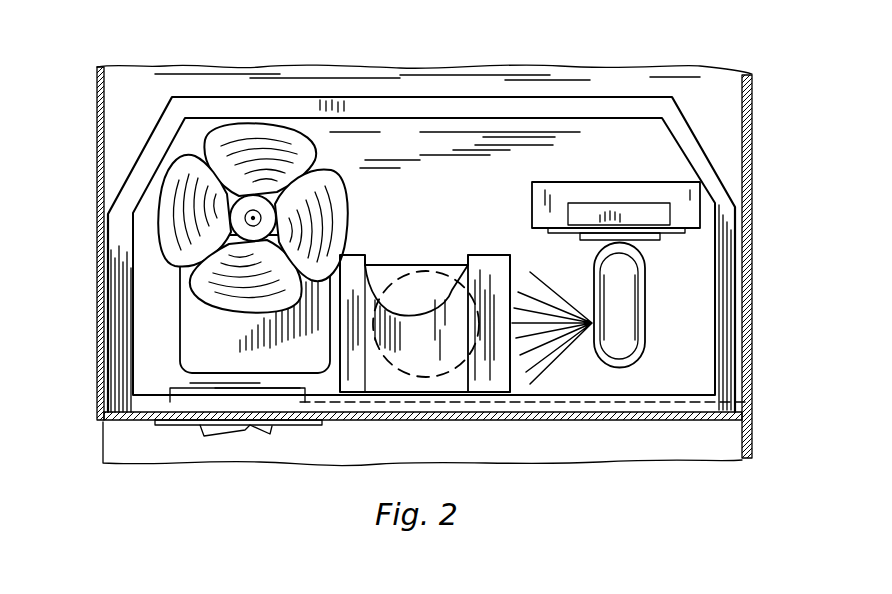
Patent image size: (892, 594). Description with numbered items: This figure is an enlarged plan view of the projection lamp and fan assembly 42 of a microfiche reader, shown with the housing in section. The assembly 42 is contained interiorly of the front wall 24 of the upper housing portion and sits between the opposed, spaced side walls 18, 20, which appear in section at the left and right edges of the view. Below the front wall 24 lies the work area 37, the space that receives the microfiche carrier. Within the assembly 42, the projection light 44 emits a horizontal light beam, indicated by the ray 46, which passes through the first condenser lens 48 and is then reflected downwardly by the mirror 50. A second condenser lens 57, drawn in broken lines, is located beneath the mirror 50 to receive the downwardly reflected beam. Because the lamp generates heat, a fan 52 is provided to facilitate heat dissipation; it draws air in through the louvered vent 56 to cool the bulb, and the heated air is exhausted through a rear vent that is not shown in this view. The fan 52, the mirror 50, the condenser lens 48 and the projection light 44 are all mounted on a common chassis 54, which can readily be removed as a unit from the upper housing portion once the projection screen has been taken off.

The side wall 18 is at (97, 158).
The side wall 20 is at (752, 172).
The front wall 24 is at (363, 413).
The work area 37 is at (119, 452).
The projection lamp and fan assembly 42 is at (621, 100).
The projection light 44 is at (626, 310).
The ray 46 is at (538, 298).
The first condenser lens 48 is at (487, 275).
The mirror 50 is at (356, 275).
The fan 52 is at (196, 357).
The chassis 54 is at (470, 117).
The louvered vent 56 is at (742, 402).
The second condenser lens 57 is at (425, 270).